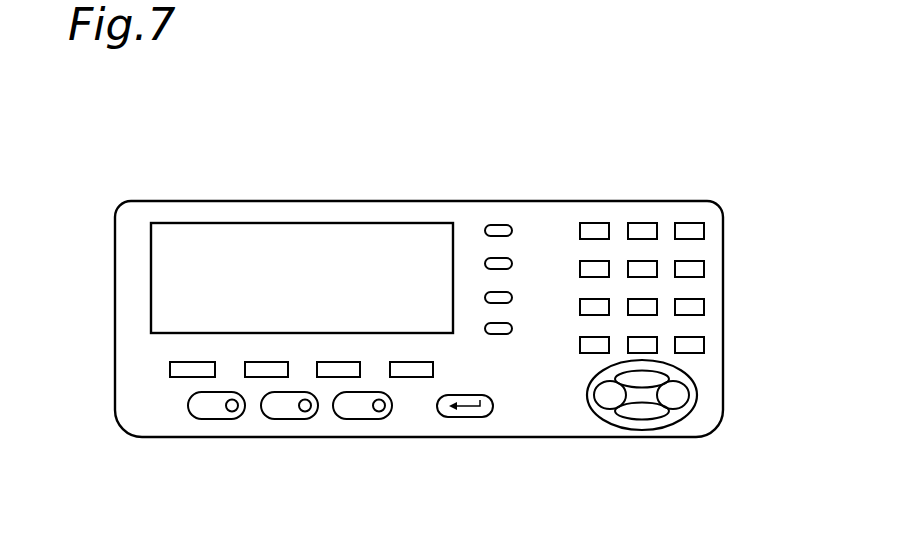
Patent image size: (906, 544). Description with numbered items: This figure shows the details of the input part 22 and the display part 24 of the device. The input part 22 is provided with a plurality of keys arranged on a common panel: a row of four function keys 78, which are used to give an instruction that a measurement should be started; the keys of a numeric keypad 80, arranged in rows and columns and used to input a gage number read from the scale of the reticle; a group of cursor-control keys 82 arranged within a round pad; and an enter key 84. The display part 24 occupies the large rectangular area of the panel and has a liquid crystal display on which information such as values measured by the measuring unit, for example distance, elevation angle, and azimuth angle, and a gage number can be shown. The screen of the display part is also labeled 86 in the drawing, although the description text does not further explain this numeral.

The input part 22 is at (563, 225).
The display part 24 is at (225, 223).
The display screen 86 is at (302, 219).
The function keys 78 is at (158, 368).
The numeric keypad 80 is at (703, 217).
The cursor-control keys 82 is at (588, 408).
The enter key 84 is at (460, 417).